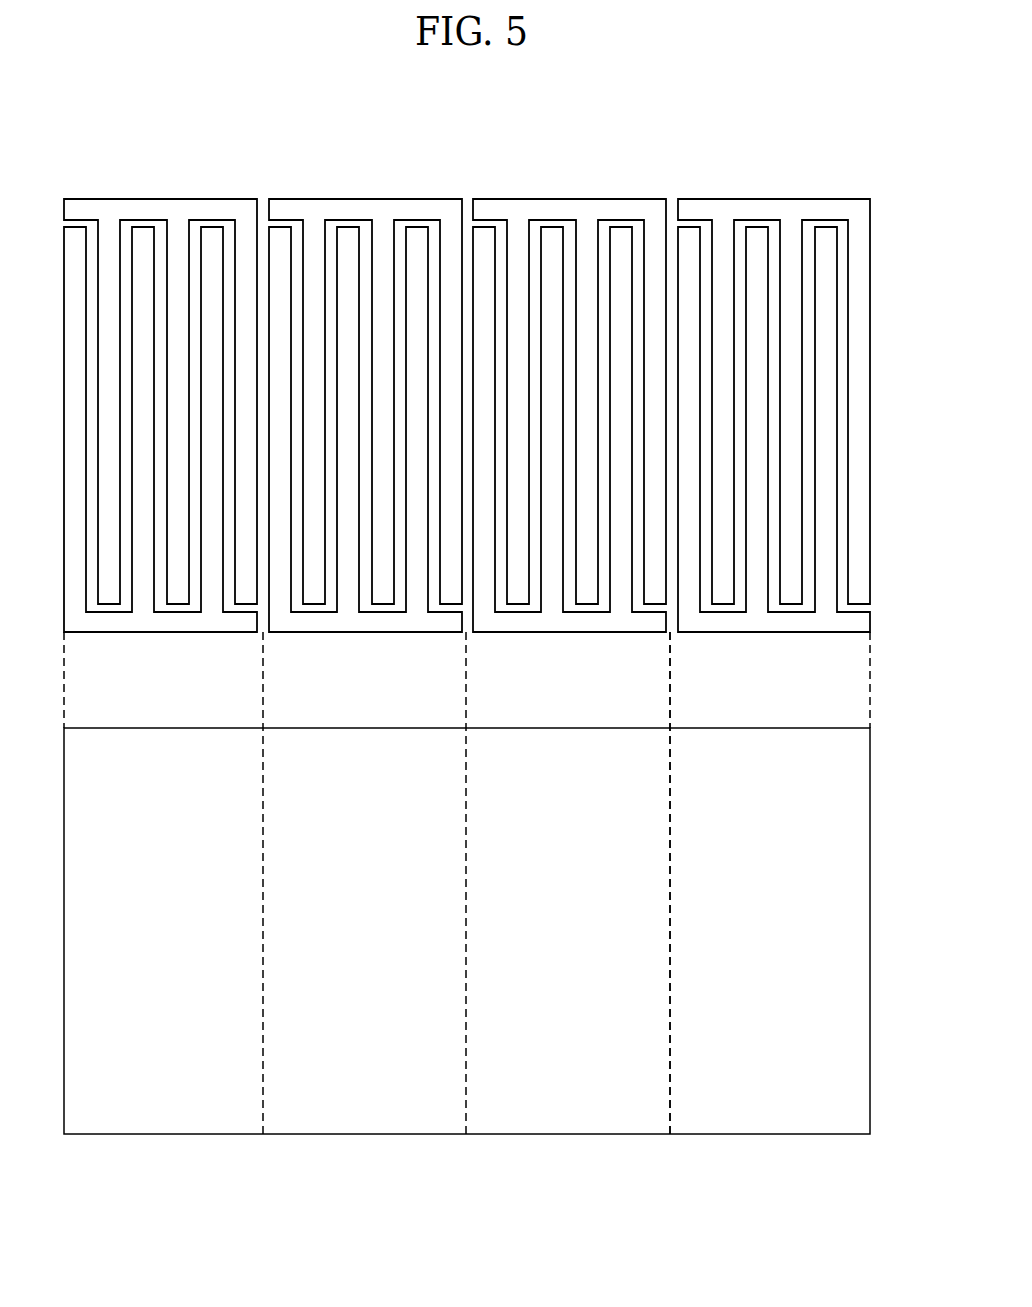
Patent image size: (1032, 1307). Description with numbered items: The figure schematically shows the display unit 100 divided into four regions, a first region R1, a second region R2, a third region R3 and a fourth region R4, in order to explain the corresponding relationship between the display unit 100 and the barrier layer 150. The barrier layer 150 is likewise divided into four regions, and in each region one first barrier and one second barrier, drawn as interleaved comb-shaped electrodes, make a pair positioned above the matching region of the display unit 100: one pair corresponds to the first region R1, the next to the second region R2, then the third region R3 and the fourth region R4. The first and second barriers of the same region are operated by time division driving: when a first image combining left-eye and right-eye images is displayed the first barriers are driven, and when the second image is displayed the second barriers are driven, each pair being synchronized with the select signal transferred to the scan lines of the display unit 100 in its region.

The barrier layer 150 is at (681, 113).
The display unit 100 is at (505, 1134).
The first region R1 is at (205, 883).
The second region R2 is at (406, 883).
The third region R3 is at (609, 883).
The fourth region R4 is at (722, 883).